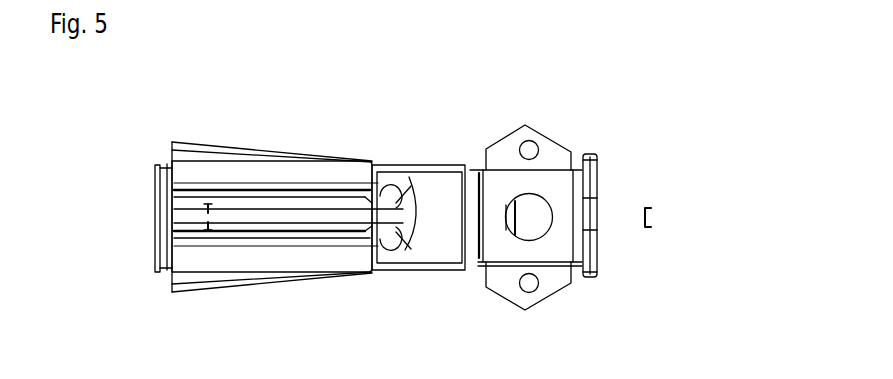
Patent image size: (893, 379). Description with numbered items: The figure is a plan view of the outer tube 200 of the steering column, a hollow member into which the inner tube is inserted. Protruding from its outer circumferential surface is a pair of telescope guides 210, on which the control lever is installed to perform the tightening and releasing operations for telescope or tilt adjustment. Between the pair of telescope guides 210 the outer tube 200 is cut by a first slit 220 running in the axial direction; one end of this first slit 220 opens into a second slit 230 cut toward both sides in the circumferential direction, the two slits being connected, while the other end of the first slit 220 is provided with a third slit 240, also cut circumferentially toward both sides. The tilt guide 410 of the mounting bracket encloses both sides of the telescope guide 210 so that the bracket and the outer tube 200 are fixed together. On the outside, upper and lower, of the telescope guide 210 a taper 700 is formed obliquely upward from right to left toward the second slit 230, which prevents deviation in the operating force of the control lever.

The outer tube 200 is at (508, 182).
The telescope guide 210 is at (262, 170).
The first slit 220 is at (286, 213).
The second slit 230 is at (155, 207).
The third slit 240 is at (414, 177).
The tilt guide 410 is at (261, 150).
The taper 700 is at (192, 153).